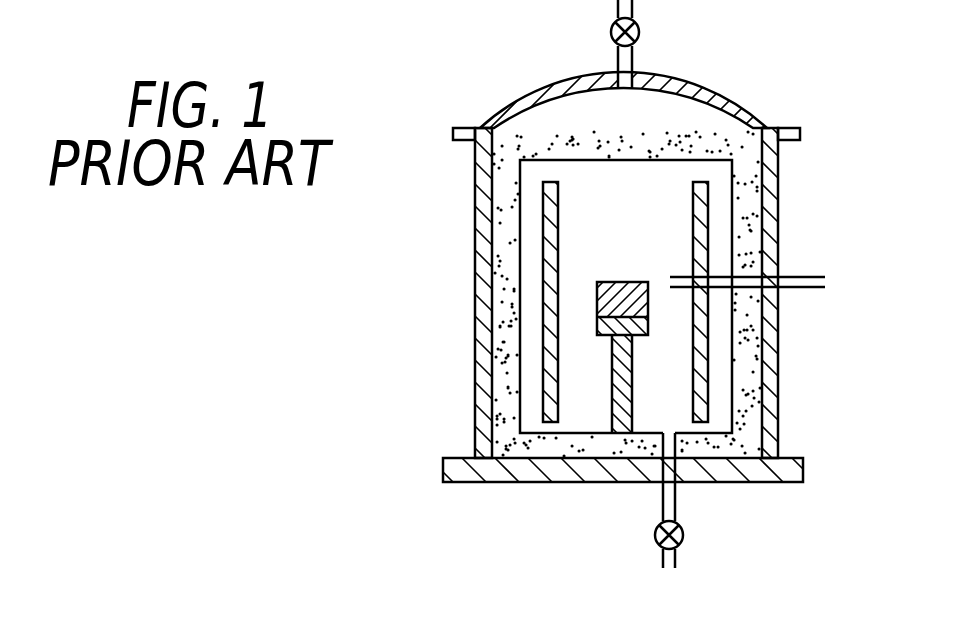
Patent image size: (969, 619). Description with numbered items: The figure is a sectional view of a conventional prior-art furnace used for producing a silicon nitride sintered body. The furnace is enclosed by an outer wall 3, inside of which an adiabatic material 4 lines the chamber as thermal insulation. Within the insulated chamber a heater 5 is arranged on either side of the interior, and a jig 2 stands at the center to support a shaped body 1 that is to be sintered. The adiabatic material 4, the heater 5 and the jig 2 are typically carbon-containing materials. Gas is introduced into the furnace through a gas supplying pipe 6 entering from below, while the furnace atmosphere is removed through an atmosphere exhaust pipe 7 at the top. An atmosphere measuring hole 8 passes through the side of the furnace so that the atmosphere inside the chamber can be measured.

The shaped body 1 is at (597, 297).
The jig 2 is at (615, 400).
The outer wall 3 is at (770, 412).
The adiabatic material 4 is at (750, 349).
The heater 5 is at (543, 225).
The gas supplying pipe 6 is at (676, 503).
The atmosphere exhaust pipe 7 is at (633, 62).
The atmosphere measuring hole 8 is at (810, 277).